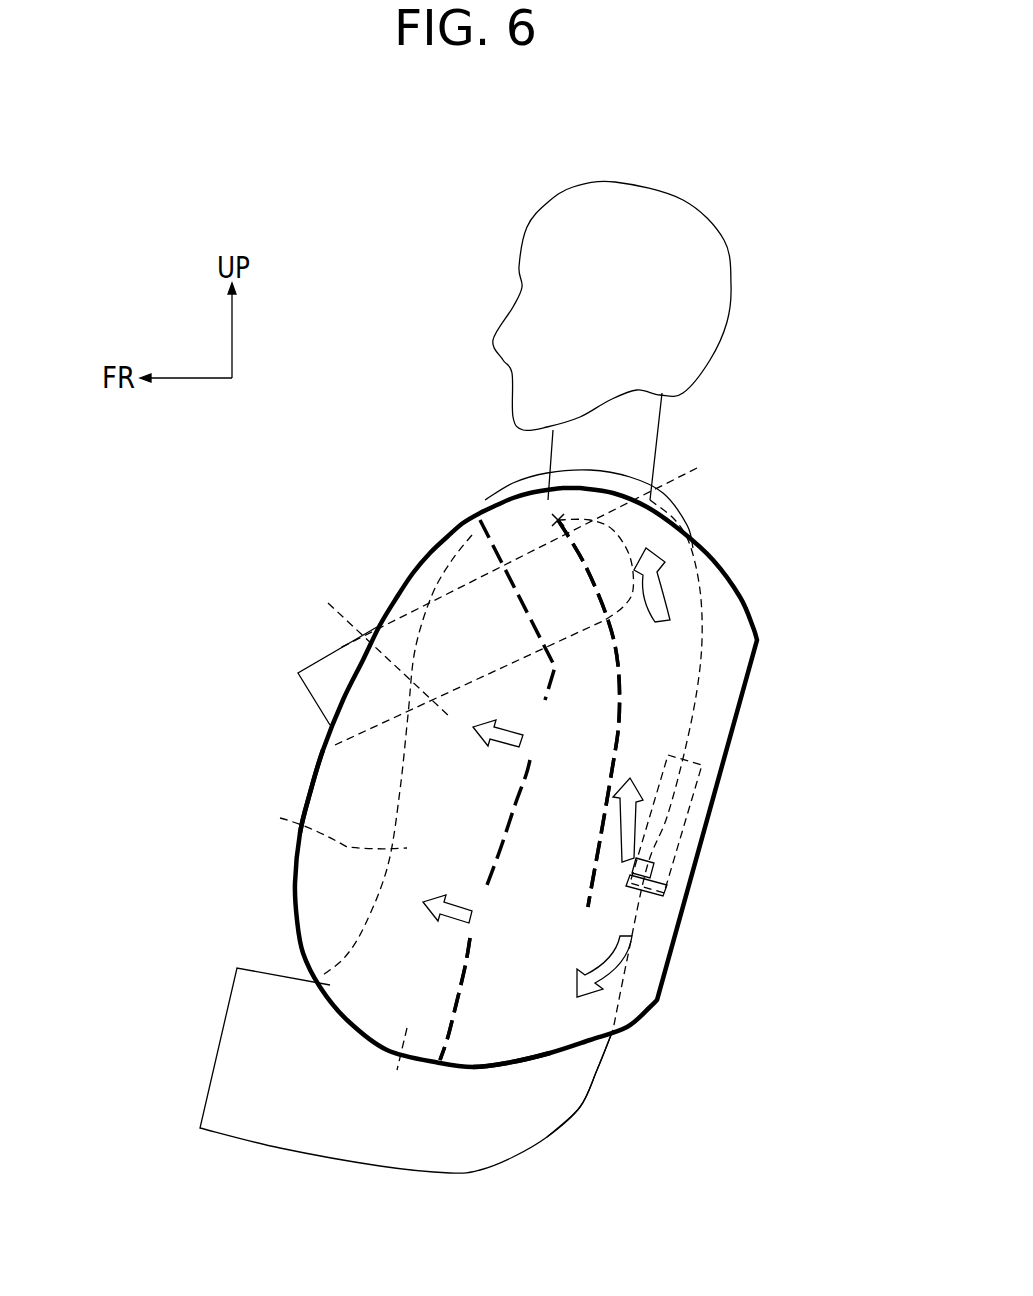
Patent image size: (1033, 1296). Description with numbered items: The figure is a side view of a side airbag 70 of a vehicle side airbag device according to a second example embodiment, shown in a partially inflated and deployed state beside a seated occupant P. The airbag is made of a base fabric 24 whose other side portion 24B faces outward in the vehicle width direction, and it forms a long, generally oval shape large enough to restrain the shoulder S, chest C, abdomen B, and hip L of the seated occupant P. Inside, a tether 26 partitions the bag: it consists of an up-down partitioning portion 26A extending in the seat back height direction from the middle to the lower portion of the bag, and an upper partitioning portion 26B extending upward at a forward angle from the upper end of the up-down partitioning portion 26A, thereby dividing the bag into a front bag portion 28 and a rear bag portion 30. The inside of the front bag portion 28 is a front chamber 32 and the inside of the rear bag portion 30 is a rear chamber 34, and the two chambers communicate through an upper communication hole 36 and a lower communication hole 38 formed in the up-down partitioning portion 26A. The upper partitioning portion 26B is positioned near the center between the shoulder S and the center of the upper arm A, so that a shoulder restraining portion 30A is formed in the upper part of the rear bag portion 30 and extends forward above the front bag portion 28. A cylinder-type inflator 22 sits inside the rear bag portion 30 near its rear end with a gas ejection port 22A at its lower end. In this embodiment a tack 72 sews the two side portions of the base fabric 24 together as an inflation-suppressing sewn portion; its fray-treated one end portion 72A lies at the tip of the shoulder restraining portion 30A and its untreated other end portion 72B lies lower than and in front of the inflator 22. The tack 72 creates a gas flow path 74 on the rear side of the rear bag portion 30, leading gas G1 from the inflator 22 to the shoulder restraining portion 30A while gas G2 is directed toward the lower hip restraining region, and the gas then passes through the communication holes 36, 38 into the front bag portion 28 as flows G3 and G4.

The inflator 22 is at (727, 841).
The gas ejection port 22A is at (670, 882).
The base fabric 24 is at (406, 1070).
The other side portion of the base fabric 24B is at (337, 982).
The tether 26 is at (466, 790).
The up-down partitioning portion 26A is at (455, 990).
The upper partitioning portion 26B is at (513, 608).
The front bag portion 28 is at (317, 868).
The rear bag portion 30 is at (512, 1027).
The shoulder restraining portion 30A is at (589, 508).
The front chamber 32 is at (320, 898).
The rear chamber 34 is at (557, 1027).
The communication hole 36 is at (530, 762).
The communication hole 38 is at (477, 933).
The side airbag 70 is at (307, 792).
The tack 72 is at (620, 680).
The one end portion of the tack 72A is at (557, 519).
The other end portion of the tack 72B is at (588, 905).
The gas flow path 74 is at (680, 641).
The seated occupant P is at (615, 181).
The shoulder S is at (521, 589).
The upper arm A is at (297, 676).
The abdomen B is at (328, 826).
The chest C is at (381, 647).
The hip L is at (395, 1068).
The gas G1 is at (672, 592).
The gas G2 is at (622, 960).
The gas flow G3 is at (480, 737).
The gas flow G4 is at (427, 920).